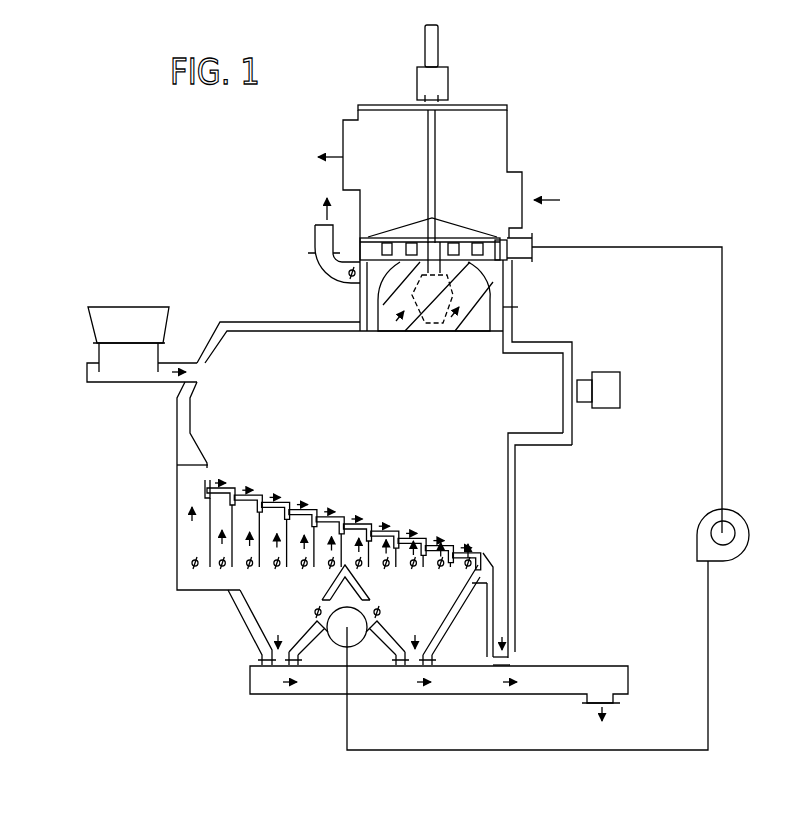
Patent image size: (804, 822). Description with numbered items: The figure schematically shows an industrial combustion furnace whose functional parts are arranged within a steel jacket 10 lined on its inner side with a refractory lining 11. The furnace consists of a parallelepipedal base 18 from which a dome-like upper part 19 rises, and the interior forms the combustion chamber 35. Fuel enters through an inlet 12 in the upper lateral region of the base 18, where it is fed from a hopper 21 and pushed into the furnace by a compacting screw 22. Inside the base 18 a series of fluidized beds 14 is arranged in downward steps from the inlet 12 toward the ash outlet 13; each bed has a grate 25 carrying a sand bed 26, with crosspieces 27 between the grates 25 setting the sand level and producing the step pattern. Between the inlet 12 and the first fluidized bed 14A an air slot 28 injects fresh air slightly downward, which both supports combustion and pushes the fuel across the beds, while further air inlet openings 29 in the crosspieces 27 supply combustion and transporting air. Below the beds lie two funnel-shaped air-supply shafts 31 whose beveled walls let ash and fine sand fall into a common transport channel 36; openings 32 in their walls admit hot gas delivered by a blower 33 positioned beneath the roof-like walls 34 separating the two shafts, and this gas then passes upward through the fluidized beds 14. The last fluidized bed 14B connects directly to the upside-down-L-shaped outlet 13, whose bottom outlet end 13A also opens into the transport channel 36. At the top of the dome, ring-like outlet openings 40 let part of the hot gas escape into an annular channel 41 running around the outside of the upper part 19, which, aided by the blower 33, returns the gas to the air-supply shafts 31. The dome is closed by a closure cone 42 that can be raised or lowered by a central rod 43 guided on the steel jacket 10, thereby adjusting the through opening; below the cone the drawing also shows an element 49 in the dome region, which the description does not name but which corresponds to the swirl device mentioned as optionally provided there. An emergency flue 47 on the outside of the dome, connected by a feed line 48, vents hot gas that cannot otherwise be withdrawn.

The steel jacket 10 is at (507, 119).
The refractory lining 11 is at (270, 333).
The inlet 12 is at (152, 322).
The outlet 13 is at (501, 587).
The bottom outlet end 13A is at (502, 666).
The fluidized beds 14 is at (319, 505).
The first fluidized bed 14A is at (220, 476).
The last fluidized bed 14B is at (466, 546).
The parallelepipedal base 18 is at (515, 497).
The upper part 19 is at (513, 287).
The hopper 21 is at (165, 320).
The compacting screw 22 is at (127, 376).
The grate 25 is at (248, 506).
The sand bed 26 is at (364, 516).
The crosspieces 27 is at (232, 503).
The air slot 28 is at (207, 475).
The air inlet openings 29 is at (279, 497).
The air-supply shafts 31 is at (253, 608).
The openings 32 is at (307, 605).
The blower 33 is at (748, 525).
The roof-like walls 34 is at (303, 640).
The combustion chamber 35 is at (346, 398).
The transport channel 36 is at (447, 688).
The outlet openings 40 is at (410, 243).
The annular channel 41 is at (611, 247).
The closure cone 42 is at (449, 217).
The rod 43 is at (437, 133).
The emergency flue 47 is at (316, 231).
The feed line 48 is at (327, 271).
The rotary screw member 49 is at (477, 331).